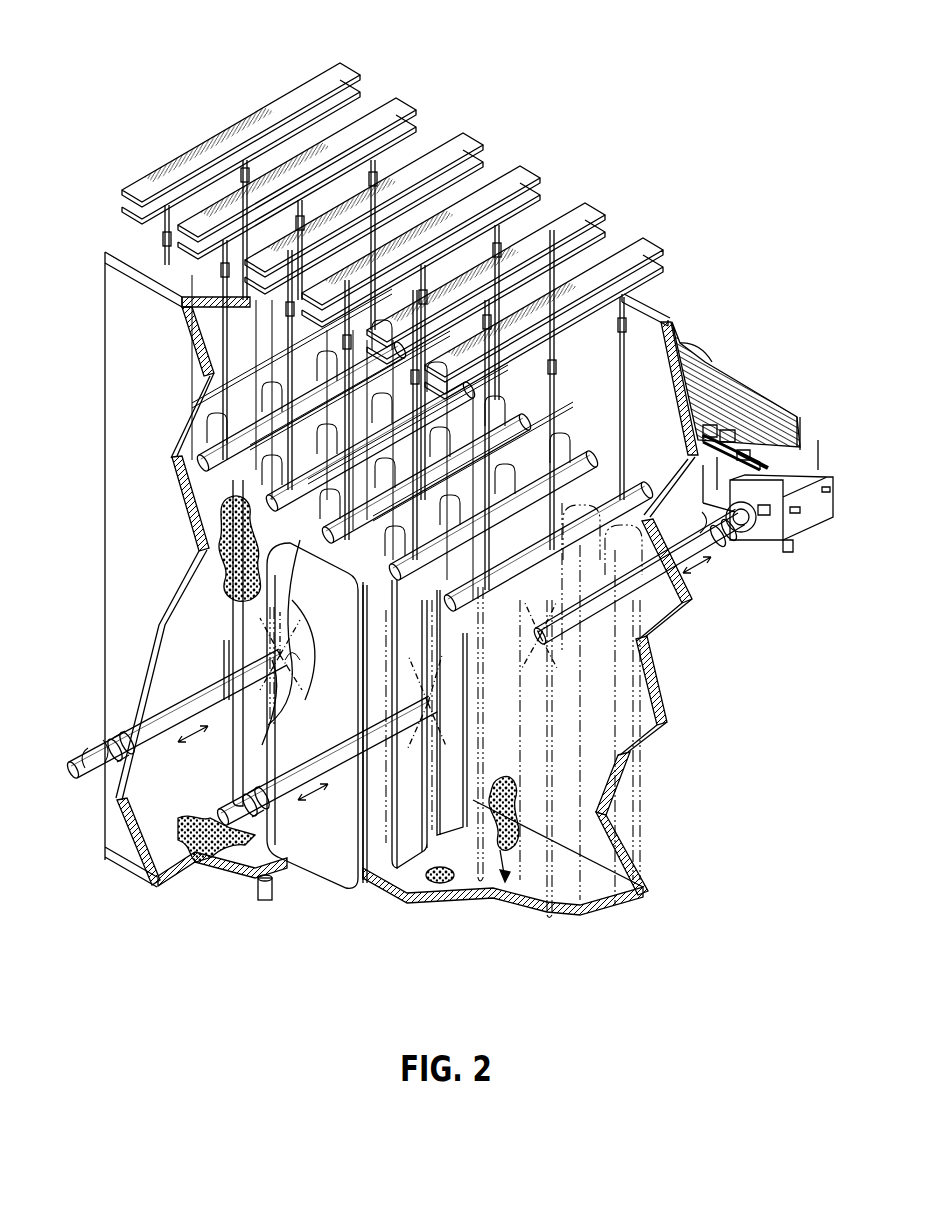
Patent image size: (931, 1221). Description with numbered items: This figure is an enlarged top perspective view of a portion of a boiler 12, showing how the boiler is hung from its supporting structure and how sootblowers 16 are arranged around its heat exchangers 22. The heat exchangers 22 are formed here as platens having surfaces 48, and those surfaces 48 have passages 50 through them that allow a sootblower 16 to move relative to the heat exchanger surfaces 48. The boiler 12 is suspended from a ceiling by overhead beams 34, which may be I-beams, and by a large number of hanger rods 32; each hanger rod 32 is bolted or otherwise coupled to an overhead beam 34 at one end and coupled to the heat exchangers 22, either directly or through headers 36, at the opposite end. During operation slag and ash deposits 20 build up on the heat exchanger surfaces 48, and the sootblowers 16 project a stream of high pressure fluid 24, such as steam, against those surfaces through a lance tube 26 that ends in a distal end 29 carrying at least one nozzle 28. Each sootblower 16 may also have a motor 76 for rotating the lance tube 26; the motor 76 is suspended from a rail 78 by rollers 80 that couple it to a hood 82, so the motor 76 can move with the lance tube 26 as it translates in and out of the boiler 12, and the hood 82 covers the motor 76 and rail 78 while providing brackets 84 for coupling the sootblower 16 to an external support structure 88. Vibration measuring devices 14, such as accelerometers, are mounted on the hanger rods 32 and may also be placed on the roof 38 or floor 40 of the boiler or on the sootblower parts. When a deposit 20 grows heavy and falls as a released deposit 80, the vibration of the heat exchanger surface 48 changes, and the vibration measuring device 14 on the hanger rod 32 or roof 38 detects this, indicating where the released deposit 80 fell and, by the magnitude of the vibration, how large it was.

The boiler 12 is at (103, 279).
The vibration measuring device 14 is at (165, 240).
The sootblower 16 is at (147, 722).
The deposit 20 is at (225, 512).
The heat exchanger 22 is at (317, 868).
The high pressure fluid 24 is at (262, 620).
The lance tube 26 is at (224, 695).
The nozzle 28 is at (282, 652).
The distal end 29 is at (290, 655).
The hanger rod 32 is at (222, 318).
The overhead beam 34 is at (245, 120).
The header 36 is at (651, 519).
The roof 38 is at (125, 245).
The floor 40 is at (173, 862).
The heat exchanger surface 48 is at (410, 645).
The passage 50 is at (348, 900).
The motor 76 is at (752, 548).
The rail 78 is at (818, 470).
The released deposit 80 is at (177, 838).
The hood 82 is at (722, 392).
The bracket 84 is at (700, 462).
The external support structure 88 is at (757, 450).